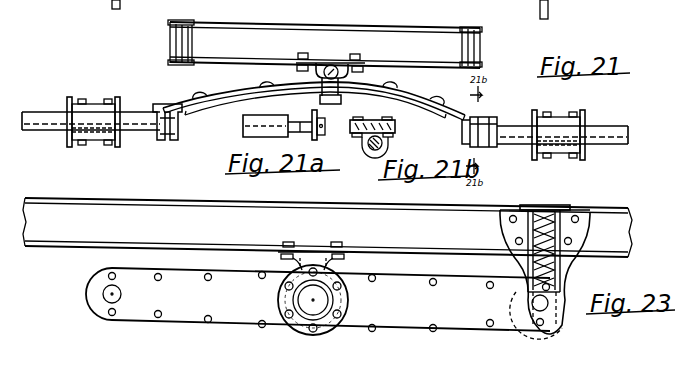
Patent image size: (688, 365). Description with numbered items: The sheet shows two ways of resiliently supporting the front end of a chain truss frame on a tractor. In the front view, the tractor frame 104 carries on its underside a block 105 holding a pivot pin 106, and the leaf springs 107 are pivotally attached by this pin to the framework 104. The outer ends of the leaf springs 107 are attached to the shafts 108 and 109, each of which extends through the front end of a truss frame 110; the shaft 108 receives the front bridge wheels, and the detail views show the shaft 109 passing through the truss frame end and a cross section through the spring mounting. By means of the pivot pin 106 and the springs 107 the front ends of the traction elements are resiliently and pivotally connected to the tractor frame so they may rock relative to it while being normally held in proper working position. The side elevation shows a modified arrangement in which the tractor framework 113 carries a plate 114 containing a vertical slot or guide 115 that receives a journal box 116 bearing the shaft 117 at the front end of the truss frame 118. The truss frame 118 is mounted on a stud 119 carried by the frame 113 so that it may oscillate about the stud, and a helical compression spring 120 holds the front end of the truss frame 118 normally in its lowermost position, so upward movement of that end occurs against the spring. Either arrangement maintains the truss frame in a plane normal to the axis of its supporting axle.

In FIG. 21, the tractor frame 104 is at (437, 36).
In FIG. 21, the block 105 is at (333, 68).
In FIG. 21, the pivot pin 106 is at (349, 74).
In FIG. 21, the leaf springs 107 is at (432, 104).
In FIG. 21, the shaft 108 is at (40, 120).
In FIG. 21, the shaft 109 is at (610, 134).
In FIG. 21A, the shaft 109 is at (246, 128).
In FIG. 21B, the shaft 109 is at (372, 152).
In FIG. 21, the truss frame 110 is at (94, 116).
In FIG. 23, the tractor framework 113 is at (612, 245).
In FIG. 23, the plate 114 is at (567, 215).
In FIG. 23, the vertical slot or guide 115 is at (548, 277).
In FIG. 23, the journal box 116 is at (548, 326).
In FIG. 23, the shaft 117 is at (538, 308).
In FIG. 23, the truss frame 118 is at (458, 322).
In FIG. 23, the stud 119 is at (313, 258).
In FIG. 23, the helical compression spring 120 is at (542, 215).